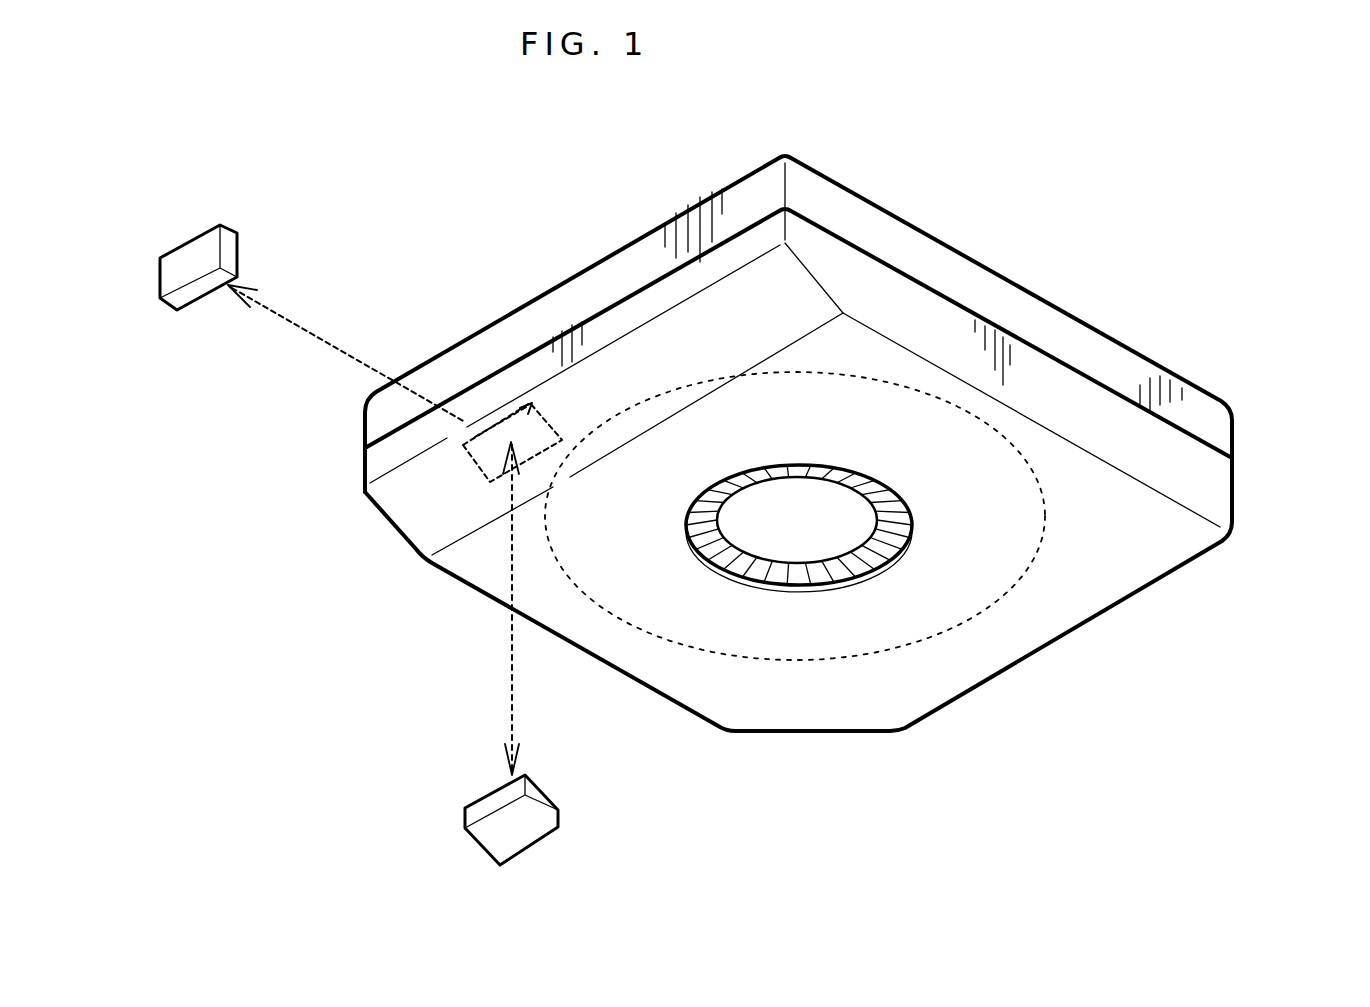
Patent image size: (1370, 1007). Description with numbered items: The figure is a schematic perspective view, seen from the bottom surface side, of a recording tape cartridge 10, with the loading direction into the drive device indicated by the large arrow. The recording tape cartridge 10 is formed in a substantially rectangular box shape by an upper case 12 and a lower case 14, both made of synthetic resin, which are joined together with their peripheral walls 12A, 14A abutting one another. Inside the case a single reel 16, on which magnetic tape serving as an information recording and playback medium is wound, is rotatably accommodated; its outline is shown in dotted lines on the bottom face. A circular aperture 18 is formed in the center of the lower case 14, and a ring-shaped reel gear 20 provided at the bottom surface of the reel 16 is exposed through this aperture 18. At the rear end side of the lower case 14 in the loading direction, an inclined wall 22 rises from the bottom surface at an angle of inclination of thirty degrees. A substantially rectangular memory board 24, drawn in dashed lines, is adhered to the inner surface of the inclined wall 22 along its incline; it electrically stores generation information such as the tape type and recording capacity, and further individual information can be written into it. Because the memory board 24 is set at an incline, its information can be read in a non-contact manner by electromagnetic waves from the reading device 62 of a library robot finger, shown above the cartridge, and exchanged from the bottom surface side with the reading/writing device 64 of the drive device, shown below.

The recording tape cartridge 10 is at (1097, 138).
The upper case 12 is at (945, 246).
The peripheral wall 12A is at (1102, 357).
The lower case 14 is at (1186, 564).
The peripheral wall 14A is at (1193, 480).
The reel 16 is at (692, 647).
The circular aperture 18 is at (900, 503).
The reel gear 20 is at (903, 547).
The inclined wall 22 is at (790, 283).
The memory board 24 is at (550, 424).
The reading device 62 is at (230, 250).
The reading/writing device 64 is at (497, 840).